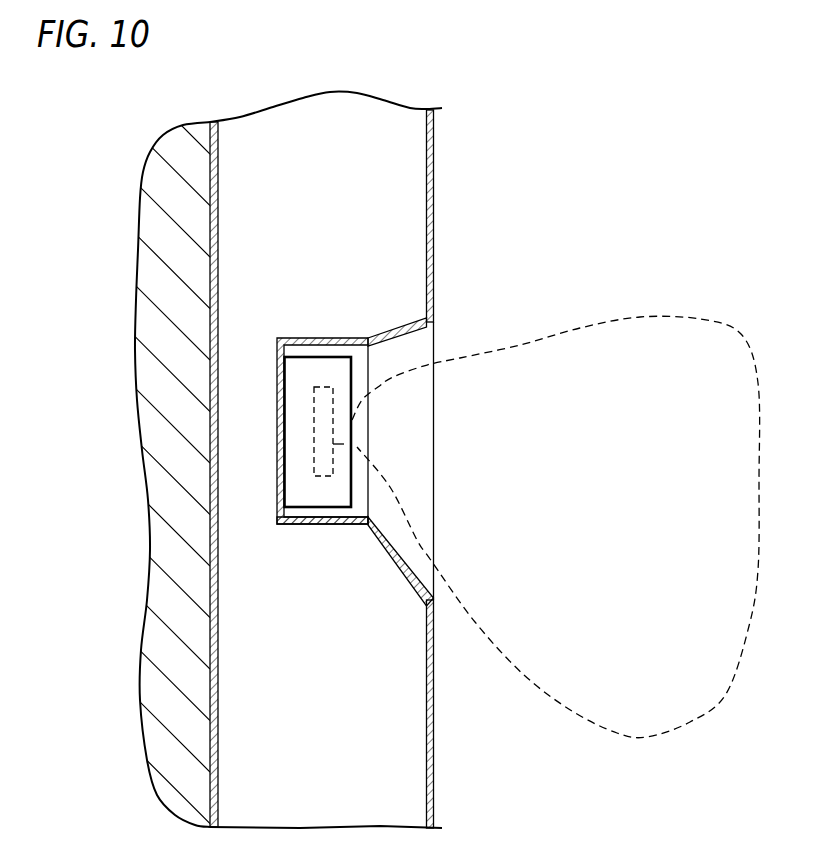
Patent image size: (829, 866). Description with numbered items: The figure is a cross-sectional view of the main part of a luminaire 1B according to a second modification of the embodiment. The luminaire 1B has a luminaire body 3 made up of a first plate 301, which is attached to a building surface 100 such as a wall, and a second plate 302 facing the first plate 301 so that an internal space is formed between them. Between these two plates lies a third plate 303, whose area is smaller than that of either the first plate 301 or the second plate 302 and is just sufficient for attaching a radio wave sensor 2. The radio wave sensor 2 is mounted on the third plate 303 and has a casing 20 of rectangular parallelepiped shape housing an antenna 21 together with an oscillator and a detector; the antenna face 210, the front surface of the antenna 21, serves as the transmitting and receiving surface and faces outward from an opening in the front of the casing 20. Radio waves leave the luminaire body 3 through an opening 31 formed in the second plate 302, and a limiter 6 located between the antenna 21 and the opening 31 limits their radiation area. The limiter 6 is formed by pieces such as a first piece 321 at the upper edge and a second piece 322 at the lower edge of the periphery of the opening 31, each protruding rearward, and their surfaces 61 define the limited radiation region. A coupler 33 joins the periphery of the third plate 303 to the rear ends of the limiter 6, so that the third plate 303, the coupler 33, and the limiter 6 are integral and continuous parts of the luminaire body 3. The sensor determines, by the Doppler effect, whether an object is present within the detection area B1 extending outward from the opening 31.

The building surface 100 is at (160, 753).
The luminaire body 3 is at (351, 460).
The first plate 301 is at (220, 200).
The second plate 302 is at (433, 752).
The third plate 303 is at (277, 424).
The opening 31 is at (433, 603).
The luminaire 1B is at (401, 393).
The radio wave sensor 2 is at (331, 402).
The casing 20 is at (291, 372).
The antenna 21 is at (316, 464).
The antenna face 210 is at (346, 444).
The coupler 33 is at (300, 527).
The limiter 6 is at (384, 447).
The inclined surface 61 is at (390, 447).
The first piece 321 is at (395, 330).
The second piece 322 is at (395, 567).
The detection area B1 is at (698, 321).